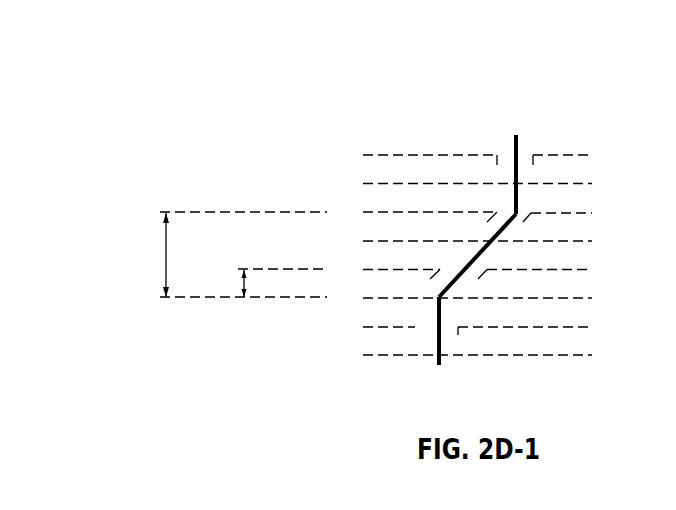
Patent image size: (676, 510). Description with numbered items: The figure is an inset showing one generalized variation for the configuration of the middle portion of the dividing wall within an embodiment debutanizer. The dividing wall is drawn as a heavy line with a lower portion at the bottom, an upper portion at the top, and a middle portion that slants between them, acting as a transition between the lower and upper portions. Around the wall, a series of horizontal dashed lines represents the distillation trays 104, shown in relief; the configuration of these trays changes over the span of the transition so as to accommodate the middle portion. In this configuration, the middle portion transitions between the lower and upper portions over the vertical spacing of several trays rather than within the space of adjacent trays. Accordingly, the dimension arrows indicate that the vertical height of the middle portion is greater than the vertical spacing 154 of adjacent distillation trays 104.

The distillation trays 104 is at (352, 198).
The vertical spacing 154 is at (244, 284).